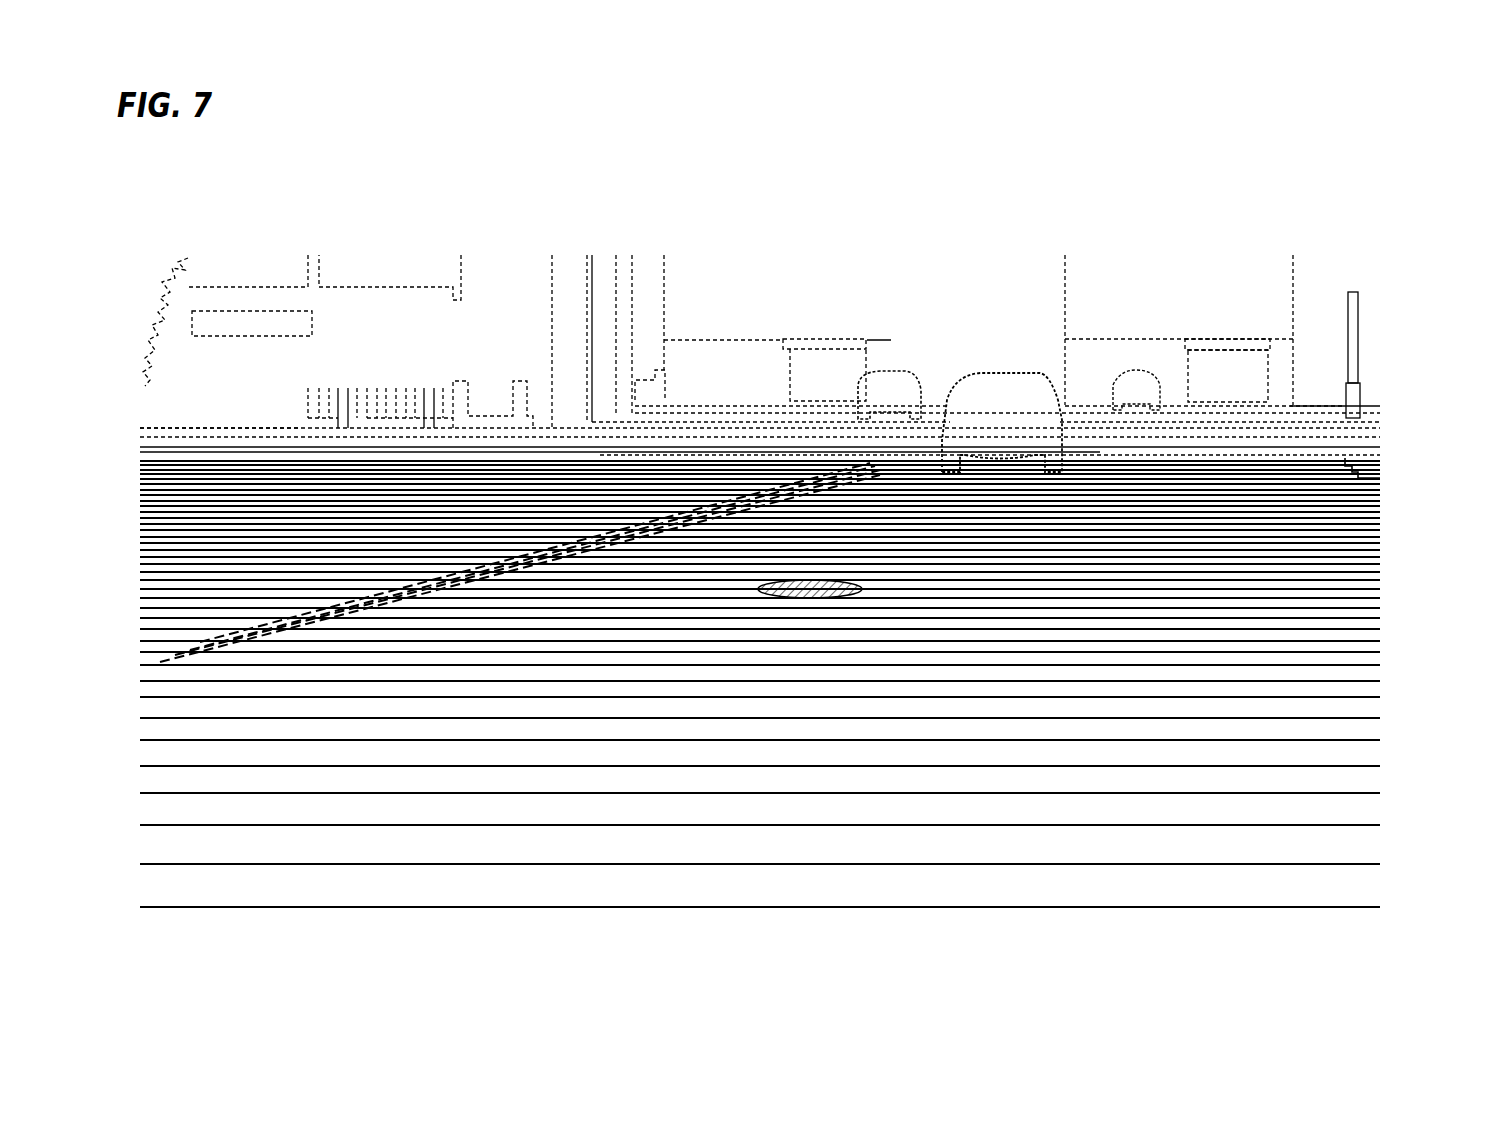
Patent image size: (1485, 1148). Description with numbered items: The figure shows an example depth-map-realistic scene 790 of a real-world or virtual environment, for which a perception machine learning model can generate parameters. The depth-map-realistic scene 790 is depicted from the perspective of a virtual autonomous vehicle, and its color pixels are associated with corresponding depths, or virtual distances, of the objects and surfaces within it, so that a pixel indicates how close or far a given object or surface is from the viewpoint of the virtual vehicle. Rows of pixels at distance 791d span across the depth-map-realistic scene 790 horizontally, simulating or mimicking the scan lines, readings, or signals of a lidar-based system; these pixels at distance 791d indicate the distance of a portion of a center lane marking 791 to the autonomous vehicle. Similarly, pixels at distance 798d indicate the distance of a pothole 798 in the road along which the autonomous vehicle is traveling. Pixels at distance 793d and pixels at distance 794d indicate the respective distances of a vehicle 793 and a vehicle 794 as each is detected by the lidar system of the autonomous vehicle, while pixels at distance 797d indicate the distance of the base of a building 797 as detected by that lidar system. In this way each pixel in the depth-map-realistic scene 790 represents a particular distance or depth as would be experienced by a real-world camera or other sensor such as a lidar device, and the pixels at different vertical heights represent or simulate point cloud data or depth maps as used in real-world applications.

The depth-map-realistic scene 790 is at (733, 240).
The building 797 is at (617, 345).
The pixels at distance 797d is at (183, 421).
The vehicle 794 is at (890, 370).
The pixels at distance 794d is at (1368, 418).
The vehicle 793 is at (980, 373).
The pixels at distance 793d is at (1370, 467).
The pothole 798 is at (858, 576).
The pixels at distance 798d is at (1370, 590).
The center lane marking 791 is at (168, 660).
The pixels at distance 791d is at (1368, 660).